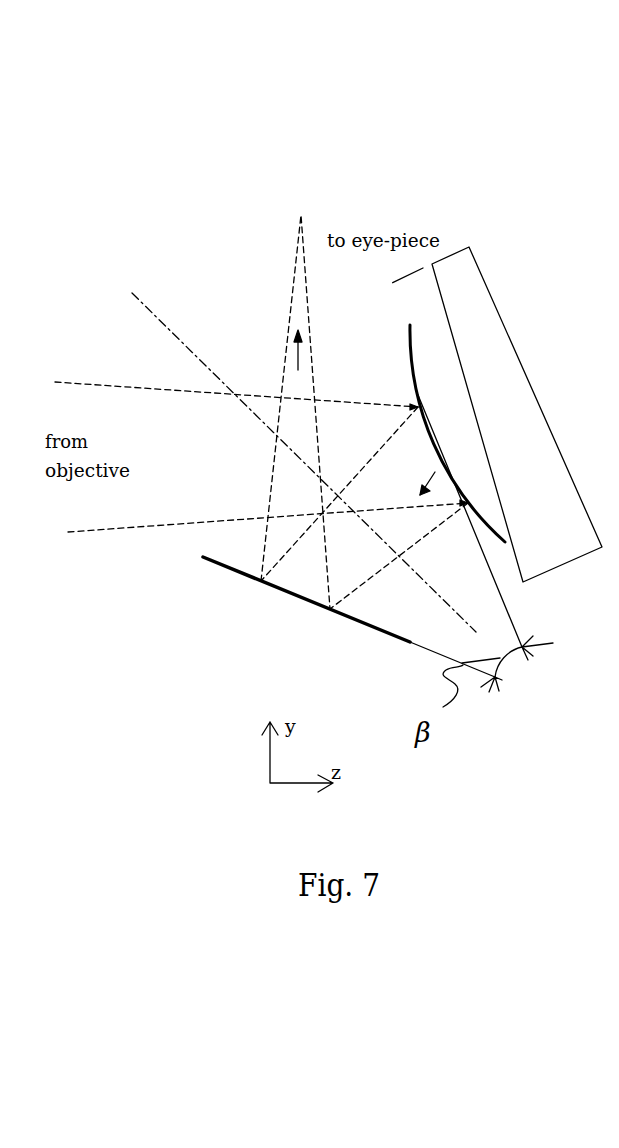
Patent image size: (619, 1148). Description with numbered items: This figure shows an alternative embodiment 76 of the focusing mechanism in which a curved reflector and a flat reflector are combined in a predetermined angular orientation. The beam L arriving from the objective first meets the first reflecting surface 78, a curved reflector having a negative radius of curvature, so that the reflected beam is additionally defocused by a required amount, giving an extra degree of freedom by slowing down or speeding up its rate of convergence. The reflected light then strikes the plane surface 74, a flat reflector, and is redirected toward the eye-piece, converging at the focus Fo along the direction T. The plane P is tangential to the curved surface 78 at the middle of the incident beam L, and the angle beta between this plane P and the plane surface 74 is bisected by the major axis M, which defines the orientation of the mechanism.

The plane surface 74 is at (245, 577).
The alternative embodiment 76 is at (490, 170).
The first reflecting surface 78 is at (408, 350).
The plane P is at (497, 583).
The major axis M is at (143, 302).
The beam L is at (213, 459).
The focus Fo is at (300, 215).
The direction T is at (299, 355).